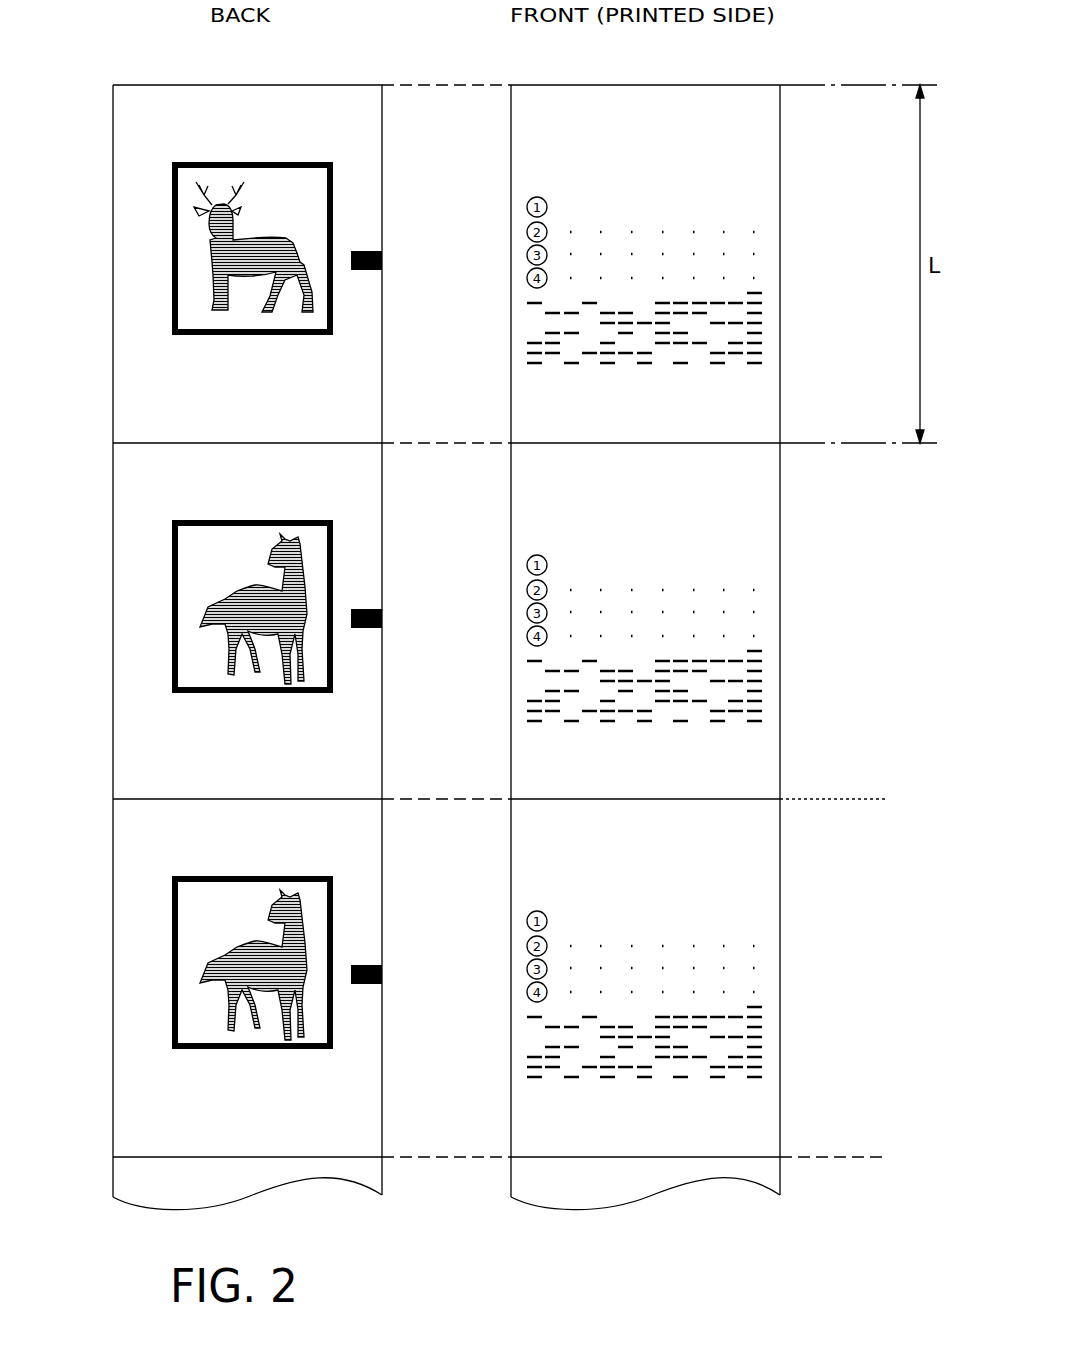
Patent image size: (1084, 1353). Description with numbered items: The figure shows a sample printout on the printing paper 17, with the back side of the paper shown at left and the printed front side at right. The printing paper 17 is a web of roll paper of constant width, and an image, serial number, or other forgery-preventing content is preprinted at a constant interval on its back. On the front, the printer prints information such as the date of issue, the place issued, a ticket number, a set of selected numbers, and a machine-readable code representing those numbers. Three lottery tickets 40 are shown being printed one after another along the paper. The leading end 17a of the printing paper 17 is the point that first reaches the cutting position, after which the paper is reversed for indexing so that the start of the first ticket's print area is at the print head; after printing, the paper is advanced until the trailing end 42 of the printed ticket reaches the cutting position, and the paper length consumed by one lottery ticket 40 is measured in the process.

The printing paper 17 is at (112, 1175).
The leading end of the printing paper 17a is at (748, 83).
The lottery ticket 40 is at (822, 90).
The trailing end of the printed lottery ticket 42 is at (748, 443).